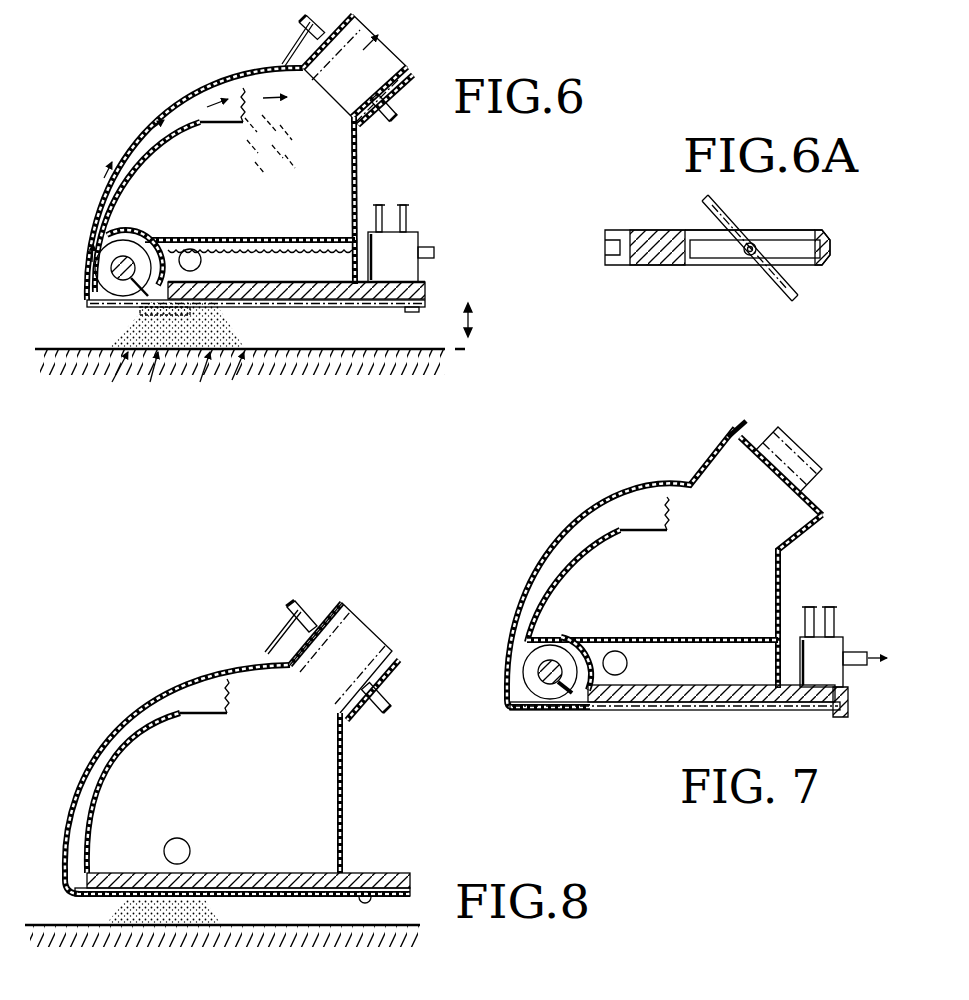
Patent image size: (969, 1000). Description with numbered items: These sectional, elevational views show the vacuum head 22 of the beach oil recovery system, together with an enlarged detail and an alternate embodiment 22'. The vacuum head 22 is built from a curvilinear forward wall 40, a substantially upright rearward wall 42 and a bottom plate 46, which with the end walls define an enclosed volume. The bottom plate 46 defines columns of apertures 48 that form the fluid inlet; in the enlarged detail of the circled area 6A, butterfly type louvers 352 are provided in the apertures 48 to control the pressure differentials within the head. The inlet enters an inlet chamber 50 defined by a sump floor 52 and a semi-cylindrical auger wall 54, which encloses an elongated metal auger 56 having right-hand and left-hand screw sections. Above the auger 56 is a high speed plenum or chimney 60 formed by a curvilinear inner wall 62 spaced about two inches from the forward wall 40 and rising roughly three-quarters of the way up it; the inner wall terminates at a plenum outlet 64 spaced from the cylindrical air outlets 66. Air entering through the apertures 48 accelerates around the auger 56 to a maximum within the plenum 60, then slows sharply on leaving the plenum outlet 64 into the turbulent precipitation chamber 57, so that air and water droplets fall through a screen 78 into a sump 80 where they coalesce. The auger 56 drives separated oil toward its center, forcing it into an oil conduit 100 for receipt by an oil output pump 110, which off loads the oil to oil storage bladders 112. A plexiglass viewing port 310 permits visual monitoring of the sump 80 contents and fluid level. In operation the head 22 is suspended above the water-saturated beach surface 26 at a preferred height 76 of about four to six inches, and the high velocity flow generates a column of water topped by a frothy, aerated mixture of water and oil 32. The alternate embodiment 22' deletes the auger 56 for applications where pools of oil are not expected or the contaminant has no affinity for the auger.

In FIG. 6, the vacuum head 22 is at (430, 142).
In FIG. 8, the alternate embodiment 22' is at (406, 772).
In FIG. 6, the beach surface 26 is at (410, 349).
In FIG. 6, the frothy aerated mixture of water and oil 32 is at (120, 334).
In FIG. 8, the frothy aerated mixture of water and oil 32 is at (100, 910).
In FIG. 6, the curvilinear forward wall 40 is at (168, 118).
In FIG. 7, the curvilinear forward wall 40 is at (557, 560).
In FIG. 8, the curvilinear forward wall 40 is at (140, 715).
In FIG. 6, the rearward wall 42 is at (361, 182).
In FIG. 7, the rearward wall 42 is at (785, 585).
In FIG. 6, the bottom plate 46 is at (372, 304).
In FIG. 6A, the bottom plate 46 is at (665, 262).
In FIG. 7, the bottom plate 46 is at (752, 712).
In FIG. 8, the bottom plate 46 is at (383, 876).
In FIG. 6A, the apertures 48 is at (695, 240).
In FIG. 6, the inlet chamber 50 is at (190, 281).
In FIG. 6, the sump floor 52 is at (294, 282).
In FIG. 6, the semi-cylindrical auger wall 54 is at (168, 243).
In FIG. 6, the auger 56 is at (100, 272).
In FIG. 6, the interior chamber 57 is at (279, 158).
In FIG. 7, the interior chamber 57 is at (717, 565).
In FIG. 8, the interior chamber 57 is at (263, 784).
In FIG. 6, the plenum 60 is at (135, 133).
In FIG. 6, the curvilinear inner wall 62 is at (158, 147).
In FIG. 6, the plenum outlet 64 is at (243, 100).
In FIG. 6, the cylindrical air outlets 66 is at (400, 66).
In FIG. 6, the preferred height 76 is at (472, 322).
In FIG. 6, the screen 78 is at (227, 237).
In FIG. 7, the screen 78 is at (657, 640).
In FIG. 6, the sump 80 is at (340, 270).
In FIG. 7, the oil conduit 100 is at (628, 705).
In FIG. 6, the oil output pump 110 is at (418, 235).
In FIG. 7, the oil output pump 110 is at (838, 637).
In FIG. 6, the oil storage bladders 112 is at (435, 252).
In FIG. 7, the oil storage bladders 112 is at (858, 670).
In FIG. 6, the plexiglass viewing port 310 is at (316, 18).
In FIG. 7, the plexiglass viewing port 310 is at (748, 438).
In FIG. 8, the plexiglass viewing port 310 is at (308, 604).
In FIG. 6A, the butterfly type louvers 352 is at (800, 240).
In FIG. 6, the circled area 6A is at (215, 318).